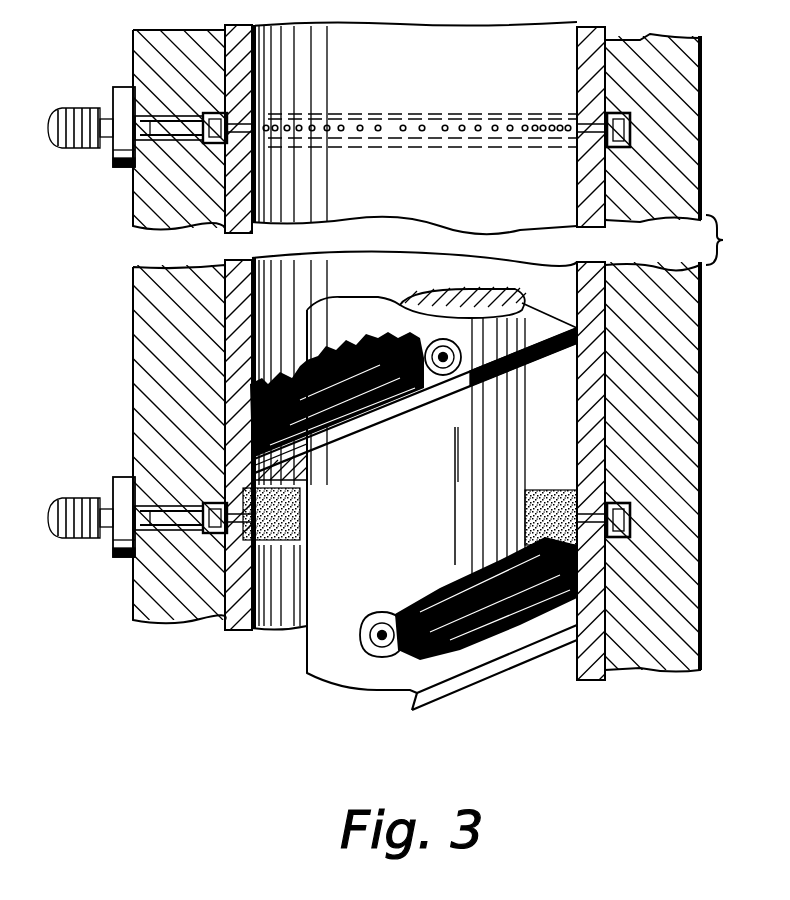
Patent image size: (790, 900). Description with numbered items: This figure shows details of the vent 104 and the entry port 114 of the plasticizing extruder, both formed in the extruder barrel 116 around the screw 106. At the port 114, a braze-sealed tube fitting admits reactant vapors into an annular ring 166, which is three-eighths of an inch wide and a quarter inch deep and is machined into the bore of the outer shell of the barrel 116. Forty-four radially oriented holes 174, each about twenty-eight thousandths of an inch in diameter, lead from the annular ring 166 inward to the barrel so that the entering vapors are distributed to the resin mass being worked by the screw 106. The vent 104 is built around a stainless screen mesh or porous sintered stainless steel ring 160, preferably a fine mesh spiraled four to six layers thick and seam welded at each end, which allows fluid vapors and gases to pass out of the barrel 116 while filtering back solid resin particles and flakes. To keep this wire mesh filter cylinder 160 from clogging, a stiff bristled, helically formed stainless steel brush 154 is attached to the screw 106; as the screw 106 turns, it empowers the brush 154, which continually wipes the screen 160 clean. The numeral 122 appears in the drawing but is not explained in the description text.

The inlet fitting 122 is at (100, 108).
The entry port 114 is at (144, 132).
The annular ring 166 is at (252, 100).
The radially oriented holes 174 is at (287, 133).
The extruder barrel 116 is at (148, 353).
The stiff bristled stainless steel brush 154 is at (332, 352).
The screw 106 is at (503, 462).
The vent 104 is at (165, 525).
The stainless steel screen ring 160 is at (236, 540).